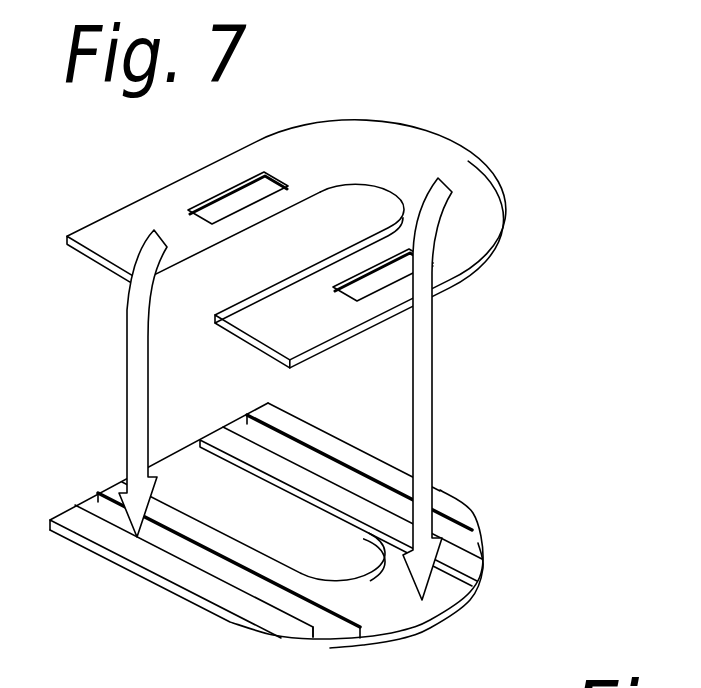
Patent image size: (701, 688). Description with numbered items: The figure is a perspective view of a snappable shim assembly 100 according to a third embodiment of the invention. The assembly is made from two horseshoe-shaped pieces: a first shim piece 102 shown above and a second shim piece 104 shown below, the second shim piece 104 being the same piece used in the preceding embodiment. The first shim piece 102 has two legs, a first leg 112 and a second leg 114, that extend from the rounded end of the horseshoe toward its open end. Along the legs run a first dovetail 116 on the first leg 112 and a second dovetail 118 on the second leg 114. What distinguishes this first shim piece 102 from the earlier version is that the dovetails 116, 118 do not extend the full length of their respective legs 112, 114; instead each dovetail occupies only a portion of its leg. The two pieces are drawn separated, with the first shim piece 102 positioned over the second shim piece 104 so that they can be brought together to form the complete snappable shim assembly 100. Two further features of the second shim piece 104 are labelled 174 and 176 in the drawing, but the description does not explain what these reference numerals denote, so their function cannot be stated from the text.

The snappable shim assembly 100 is at (338, 396).
The first shim piece 102 is at (344, 261).
The second shim piece 104 is at (488, 606).
The leg 112 is at (118, 233).
The leg 114 is at (303, 338).
The dovetail 116 is at (230, 210).
The dovetail 118 is at (377, 282).
The rails 174 is at (465, 548).
The rail groove 176 is at (323, 625).